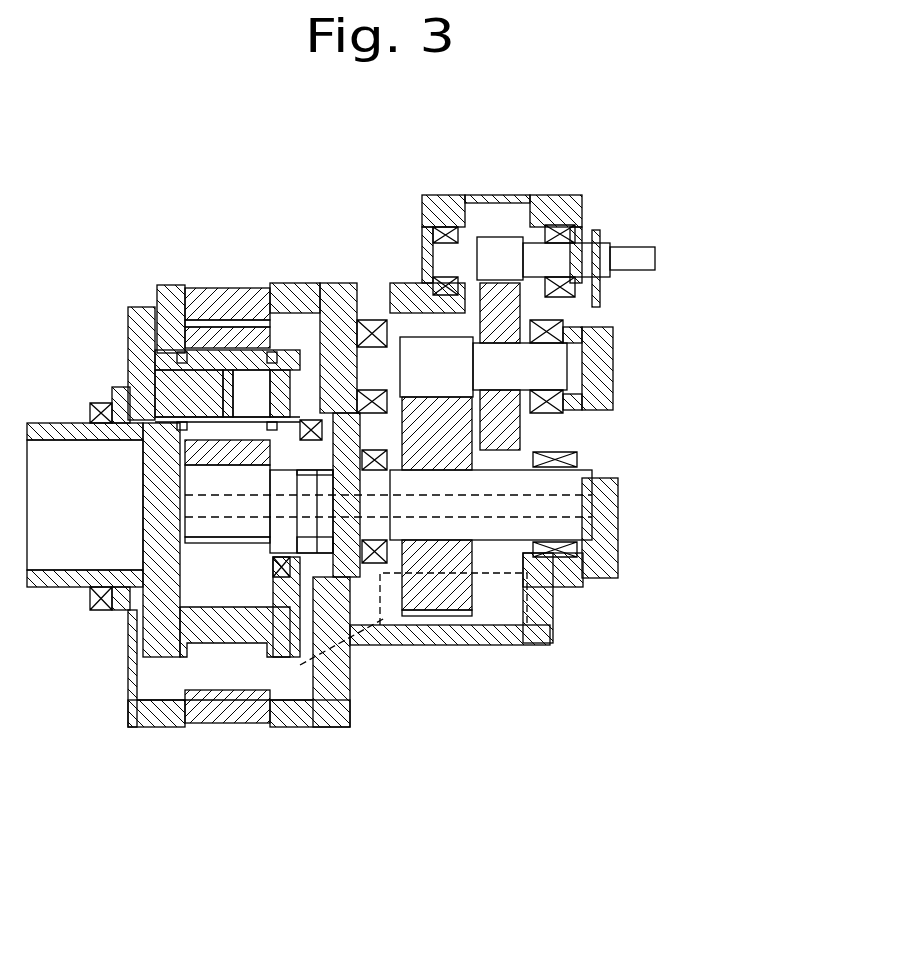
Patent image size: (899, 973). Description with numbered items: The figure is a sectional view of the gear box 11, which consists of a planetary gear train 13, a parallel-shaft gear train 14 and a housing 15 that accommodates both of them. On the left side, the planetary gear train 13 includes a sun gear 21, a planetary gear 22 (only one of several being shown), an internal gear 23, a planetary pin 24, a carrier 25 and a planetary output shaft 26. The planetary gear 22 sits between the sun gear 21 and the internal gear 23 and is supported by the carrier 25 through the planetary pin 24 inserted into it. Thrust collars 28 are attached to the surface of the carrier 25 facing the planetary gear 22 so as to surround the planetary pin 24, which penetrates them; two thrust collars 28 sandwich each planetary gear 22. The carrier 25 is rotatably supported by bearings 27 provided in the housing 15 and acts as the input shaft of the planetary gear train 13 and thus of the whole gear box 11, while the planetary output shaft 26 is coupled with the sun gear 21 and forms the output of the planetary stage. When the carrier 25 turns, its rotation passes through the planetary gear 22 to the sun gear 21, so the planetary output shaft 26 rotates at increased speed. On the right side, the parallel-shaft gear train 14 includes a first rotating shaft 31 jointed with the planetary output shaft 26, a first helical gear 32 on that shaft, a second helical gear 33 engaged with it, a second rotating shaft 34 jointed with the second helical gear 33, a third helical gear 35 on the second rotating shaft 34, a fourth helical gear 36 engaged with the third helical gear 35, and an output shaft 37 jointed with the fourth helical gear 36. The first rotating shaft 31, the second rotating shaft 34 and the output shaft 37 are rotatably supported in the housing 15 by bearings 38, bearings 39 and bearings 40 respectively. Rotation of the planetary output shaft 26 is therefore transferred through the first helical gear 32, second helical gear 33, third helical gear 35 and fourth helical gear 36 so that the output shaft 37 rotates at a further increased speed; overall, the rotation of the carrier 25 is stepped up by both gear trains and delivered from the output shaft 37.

The gear box 11 is at (56, 193).
The planetary gear train 13 is at (148, 657).
The parallel-shaft gear train 14 is at (482, 600).
The housing 15 is at (300, 727).
The sun gear 21 is at (212, 532).
The planetary gear 22 is at (220, 320).
The internal gear 23 is at (232, 300).
The planetary pin 24 is at (173, 370).
The carrier 25 is at (50, 588).
The planetary output shaft 26 is at (290, 532).
The bearing 27 is at (118, 388).
The thrust collar 28 is at (156, 332).
The first rotating shaft 31 is at (580, 523).
The first helical gear 32 is at (457, 604).
The second helical gear 33 is at (428, 335).
The second rotating shaft 34 is at (560, 370).
The third helical gear 35 is at (517, 428).
The fourth helical gear 36 is at (490, 237).
The output shaft 37 is at (637, 249).
The bearing 38 is at (560, 557).
The bearing 39 is at (560, 332).
The bearing 40 is at (558, 228).